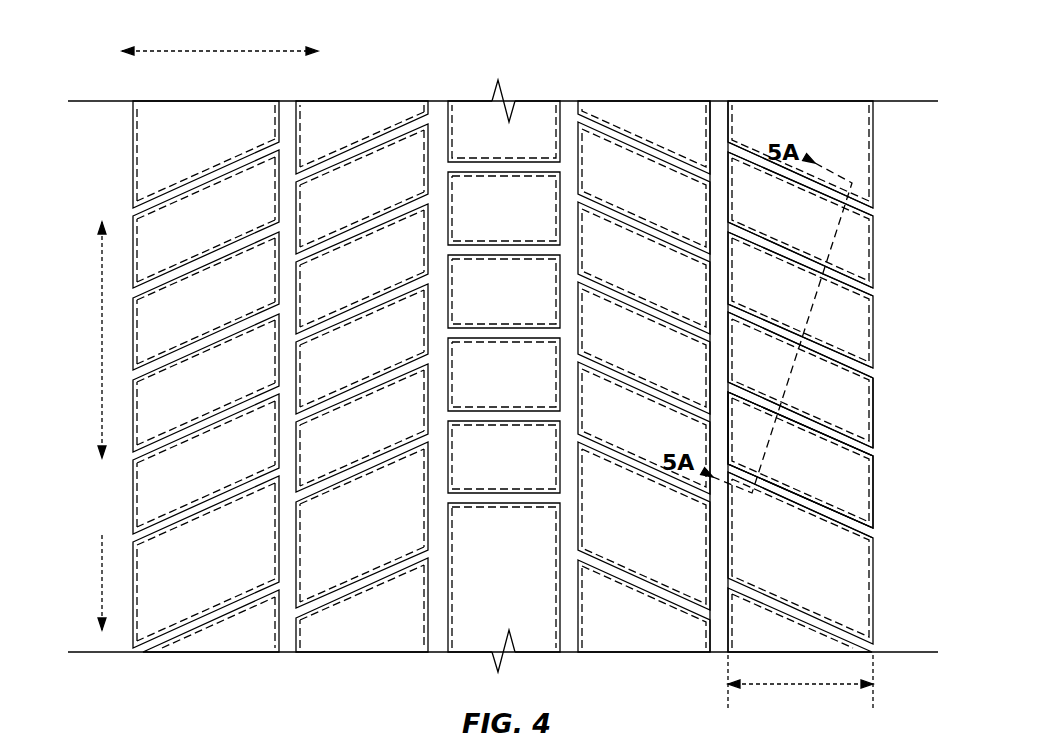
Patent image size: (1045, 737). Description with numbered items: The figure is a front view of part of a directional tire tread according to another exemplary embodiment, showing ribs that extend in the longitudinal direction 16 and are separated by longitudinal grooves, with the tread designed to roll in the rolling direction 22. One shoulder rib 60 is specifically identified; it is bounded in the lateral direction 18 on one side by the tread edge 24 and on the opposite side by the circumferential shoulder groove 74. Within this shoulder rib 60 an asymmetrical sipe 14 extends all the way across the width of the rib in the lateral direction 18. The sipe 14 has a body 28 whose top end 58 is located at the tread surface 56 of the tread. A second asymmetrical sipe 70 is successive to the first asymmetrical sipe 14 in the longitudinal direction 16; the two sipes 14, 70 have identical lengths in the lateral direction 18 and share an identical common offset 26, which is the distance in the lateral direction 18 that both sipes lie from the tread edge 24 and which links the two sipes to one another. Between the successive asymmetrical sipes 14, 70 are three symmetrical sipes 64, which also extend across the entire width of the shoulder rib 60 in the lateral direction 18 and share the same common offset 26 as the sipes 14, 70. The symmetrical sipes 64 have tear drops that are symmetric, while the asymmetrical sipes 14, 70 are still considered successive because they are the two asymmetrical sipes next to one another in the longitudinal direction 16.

The asymmetrical sipe 14 is at (805, 497).
The longitudinal direction 16 is at (102, 338).
The lateral direction 18 is at (218, 50).
The rolling direction 22 is at (102, 582).
The tread edge 24 is at (873, 418).
The common offset 26 is at (798, 688).
The body 28 is at (835, 522).
The tread surface 56 is at (525, 120).
The top end 58 is at (790, 498).
The shoulder rib 60 is at (801, 112).
The symmetrical sipes 64 is at (873, 296).
The second asymmetrical sipe 70 is at (873, 218).
The circumferential shoulder groove 74 is at (718, 112).